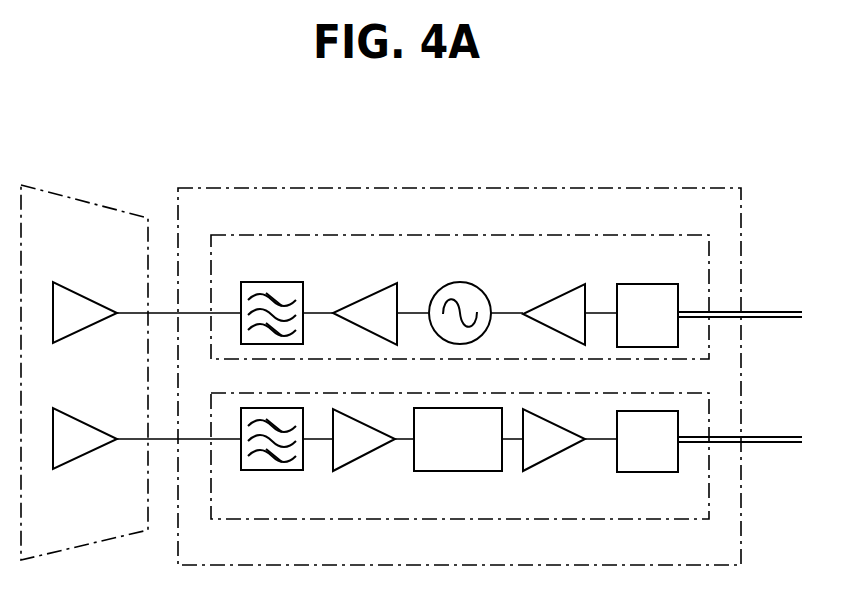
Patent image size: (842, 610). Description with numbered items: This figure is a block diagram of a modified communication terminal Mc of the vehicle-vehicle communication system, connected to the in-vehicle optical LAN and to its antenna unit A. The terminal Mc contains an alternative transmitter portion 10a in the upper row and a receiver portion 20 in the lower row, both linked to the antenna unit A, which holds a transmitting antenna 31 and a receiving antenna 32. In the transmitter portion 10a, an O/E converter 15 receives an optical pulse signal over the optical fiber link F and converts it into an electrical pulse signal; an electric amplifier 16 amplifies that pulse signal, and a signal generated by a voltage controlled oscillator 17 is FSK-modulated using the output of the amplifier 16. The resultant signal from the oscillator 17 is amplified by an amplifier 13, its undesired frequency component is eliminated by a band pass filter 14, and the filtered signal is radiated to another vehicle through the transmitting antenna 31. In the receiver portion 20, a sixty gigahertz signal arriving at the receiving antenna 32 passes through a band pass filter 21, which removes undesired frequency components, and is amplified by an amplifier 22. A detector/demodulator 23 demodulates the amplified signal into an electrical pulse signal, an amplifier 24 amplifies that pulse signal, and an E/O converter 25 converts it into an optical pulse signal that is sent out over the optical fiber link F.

The antenna unit A is at (68, 190).
The terminal Mc is at (661, 188).
The transmitter portion 10a is at (240, 235).
The receiver portion 20 is at (240, 520).
The transmitting antenna 31 is at (66, 282).
The receiving antenna 32 is at (66, 469).
The band pass filter 14 is at (272, 282).
The amplifier 13 is at (380, 291).
The voltage controlled oscillator 17 is at (460, 282).
The electric amplifier 16 is at (568, 291).
The O/E converter 15 is at (645, 284).
The optical fiber link F is at (771, 321).
The band pass filter 21 is at (272, 470).
The amplifier 22 is at (350, 463).
The detector/demodulator 23 is at (460, 471).
The amplifier 24 is at (538, 465).
The E/O converter 25 is at (645, 472).